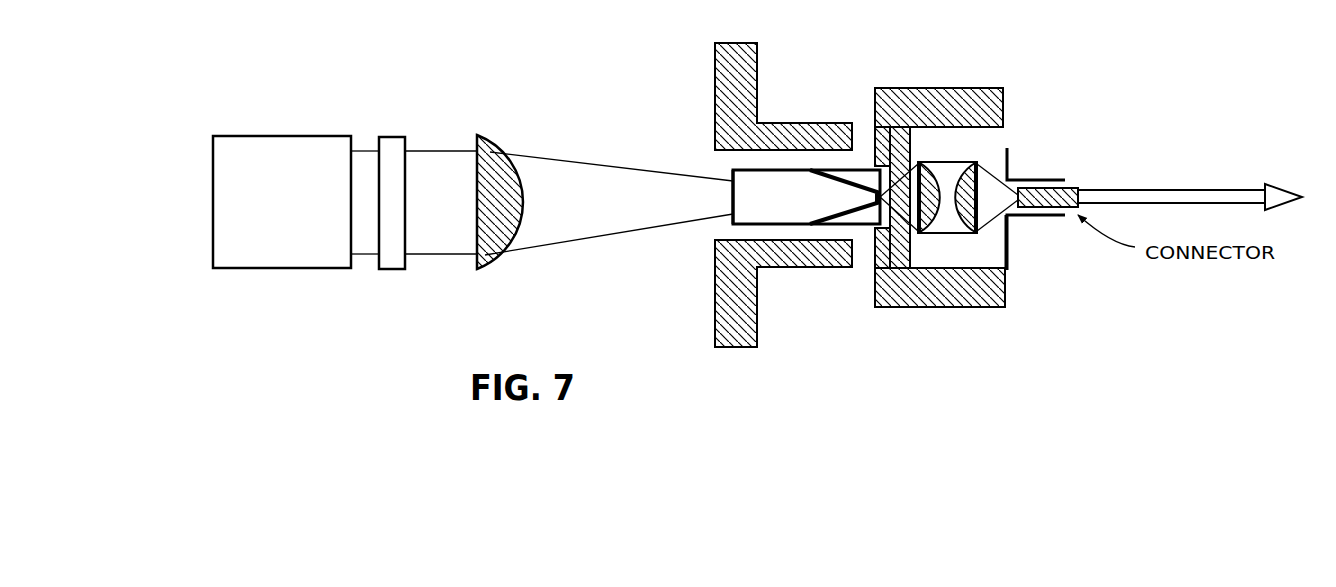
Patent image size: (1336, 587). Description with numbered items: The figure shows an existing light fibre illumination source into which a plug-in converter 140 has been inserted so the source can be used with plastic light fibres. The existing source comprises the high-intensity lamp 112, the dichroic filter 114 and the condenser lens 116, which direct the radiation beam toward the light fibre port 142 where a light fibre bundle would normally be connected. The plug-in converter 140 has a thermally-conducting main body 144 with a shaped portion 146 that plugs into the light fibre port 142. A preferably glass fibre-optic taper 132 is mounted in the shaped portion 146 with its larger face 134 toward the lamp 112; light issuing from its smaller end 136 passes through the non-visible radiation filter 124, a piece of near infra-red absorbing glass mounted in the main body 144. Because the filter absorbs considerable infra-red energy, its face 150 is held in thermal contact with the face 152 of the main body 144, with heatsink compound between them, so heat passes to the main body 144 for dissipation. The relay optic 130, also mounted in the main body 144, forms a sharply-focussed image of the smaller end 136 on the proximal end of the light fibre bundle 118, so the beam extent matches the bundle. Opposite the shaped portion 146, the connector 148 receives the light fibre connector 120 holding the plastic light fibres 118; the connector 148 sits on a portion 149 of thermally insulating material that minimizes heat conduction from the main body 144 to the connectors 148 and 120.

The high-intensity lamp 112 is at (293, 233).
The dichroic filter 114 is at (390, 270).
The condenser lens 116 is at (485, 270).
The light fibre bundle 118 is at (1215, 188).
The light fibre connector 120 is at (1072, 210).
The non-visible radiation filter 124 is at (888, 297).
The relay optic 130 is at (973, 160).
The fibre-optic taper 132 is at (745, 213).
The larger face 134 is at (730, 187).
The smaller end 136 is at (873, 123).
The plug-in converter 140 is at (935, 188).
The light fibre port 142 is at (757, 58).
The main body 144 is at (913, 250).
The shaped portion 146 is at (862, 226).
The connector 148 is at (1033, 178).
The portion of thermally insulating material 149 is at (1008, 260).
The face of the filter 150 is at (876, 302).
The face of the main body 152 is at (974, 253).